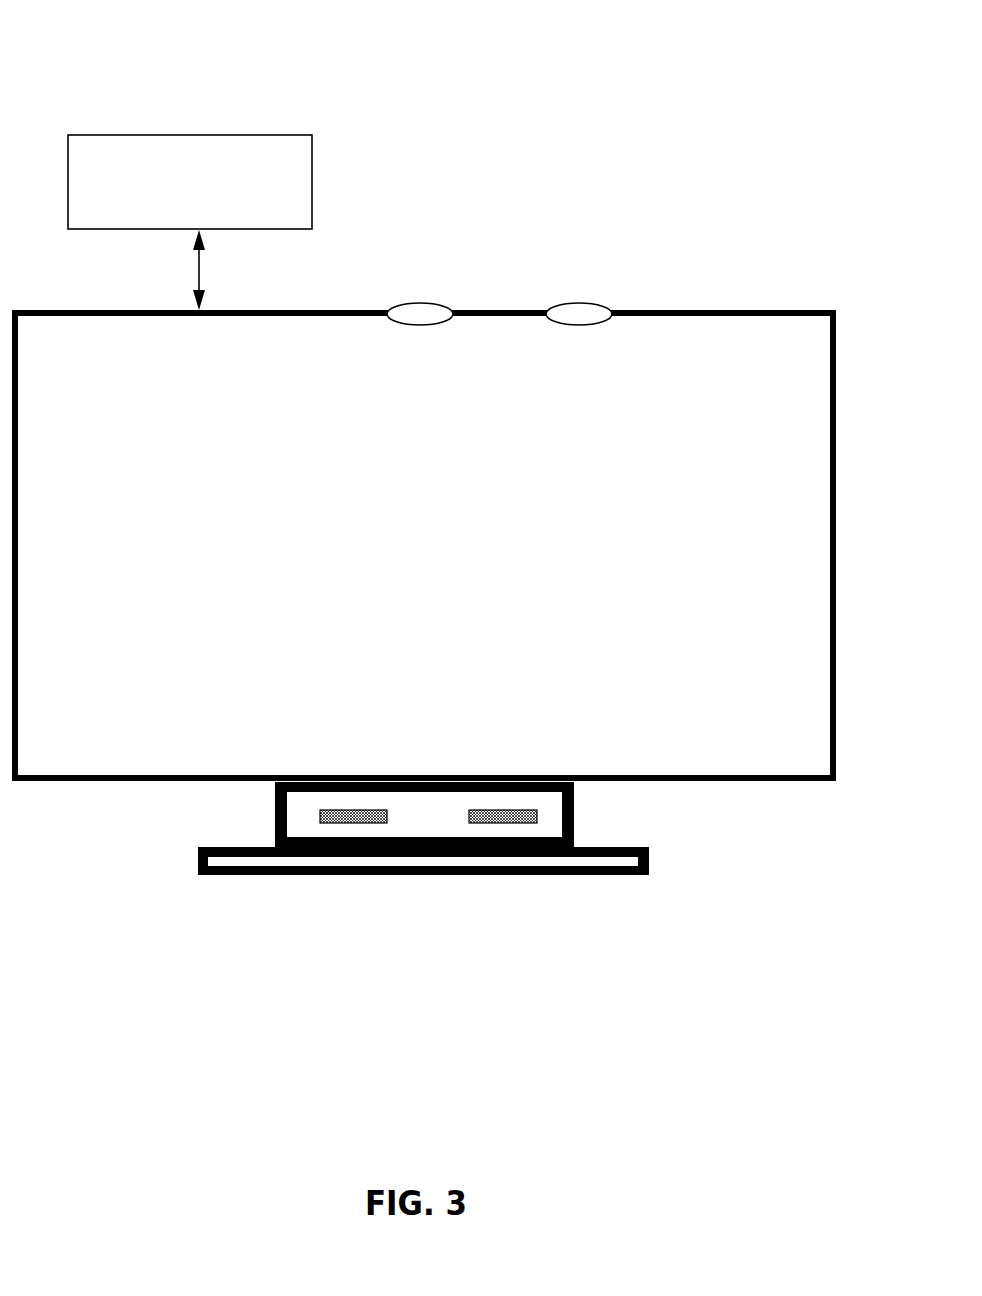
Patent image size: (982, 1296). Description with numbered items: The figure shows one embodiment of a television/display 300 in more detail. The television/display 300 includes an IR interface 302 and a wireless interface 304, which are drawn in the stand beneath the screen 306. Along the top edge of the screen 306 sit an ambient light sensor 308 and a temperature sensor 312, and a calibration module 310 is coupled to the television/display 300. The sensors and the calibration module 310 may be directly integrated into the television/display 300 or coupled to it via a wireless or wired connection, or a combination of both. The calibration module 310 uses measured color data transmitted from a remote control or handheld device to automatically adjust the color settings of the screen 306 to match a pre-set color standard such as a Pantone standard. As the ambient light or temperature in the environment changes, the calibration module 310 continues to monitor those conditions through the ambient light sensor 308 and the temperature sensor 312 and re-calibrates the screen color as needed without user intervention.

The television/display 300 is at (285, 30).
The IR interface 302 is at (320, 809).
The wireless interface 304 is at (537, 819).
The screen 306 is at (780, 310).
The ambient light sensor 308 is at (423, 303).
The calibration module 310 is at (190, 222).
The temperature sensor 312 is at (583, 303).